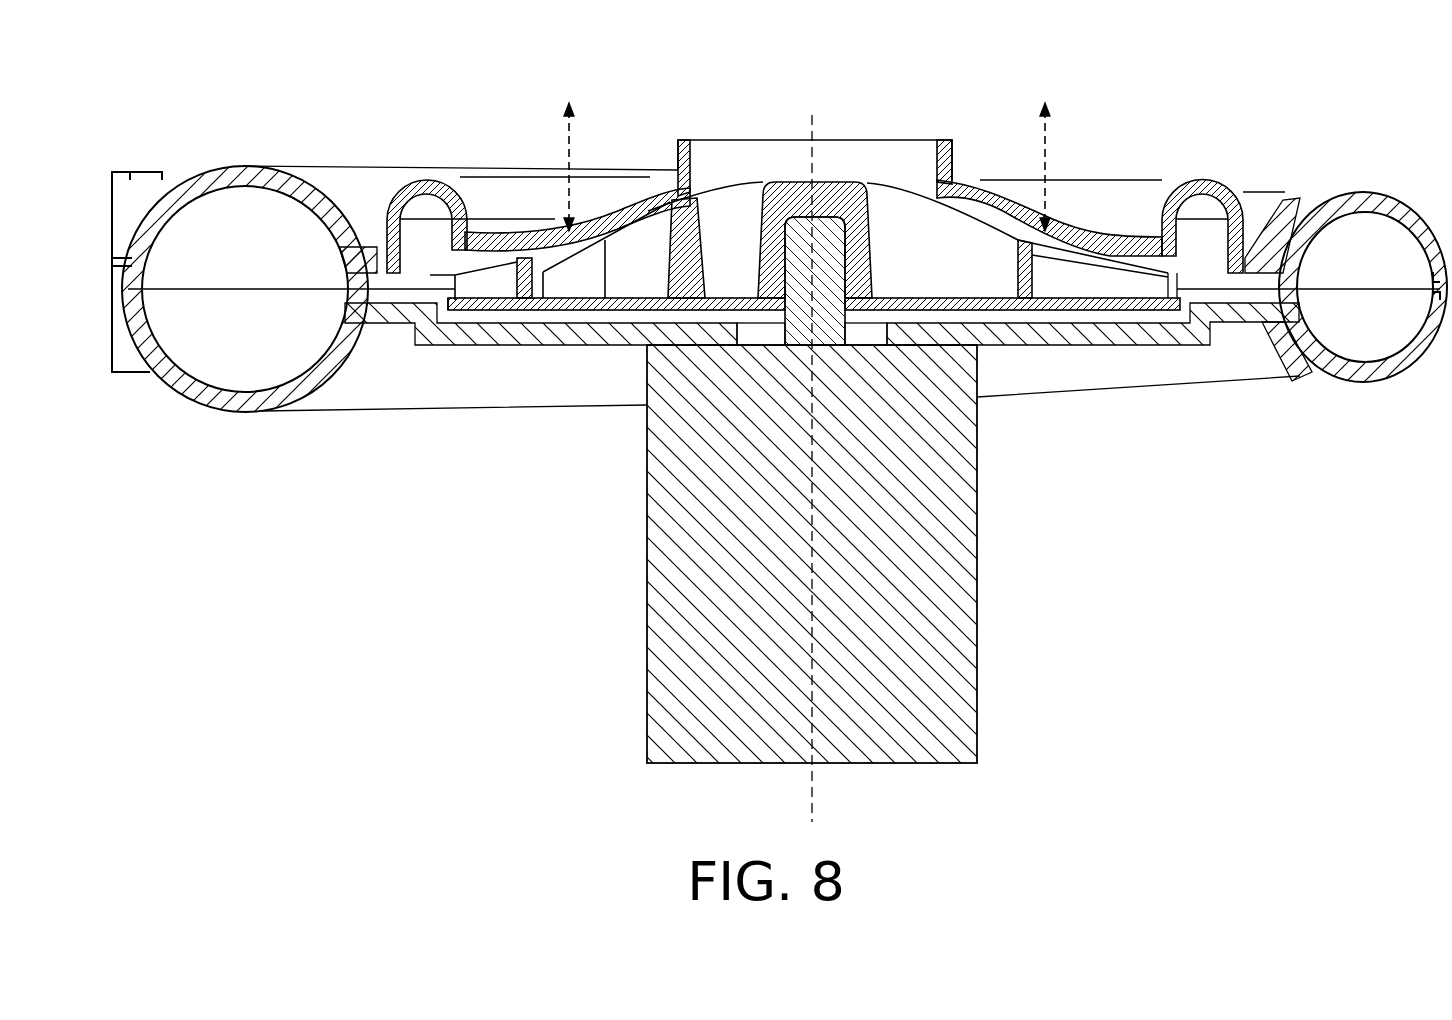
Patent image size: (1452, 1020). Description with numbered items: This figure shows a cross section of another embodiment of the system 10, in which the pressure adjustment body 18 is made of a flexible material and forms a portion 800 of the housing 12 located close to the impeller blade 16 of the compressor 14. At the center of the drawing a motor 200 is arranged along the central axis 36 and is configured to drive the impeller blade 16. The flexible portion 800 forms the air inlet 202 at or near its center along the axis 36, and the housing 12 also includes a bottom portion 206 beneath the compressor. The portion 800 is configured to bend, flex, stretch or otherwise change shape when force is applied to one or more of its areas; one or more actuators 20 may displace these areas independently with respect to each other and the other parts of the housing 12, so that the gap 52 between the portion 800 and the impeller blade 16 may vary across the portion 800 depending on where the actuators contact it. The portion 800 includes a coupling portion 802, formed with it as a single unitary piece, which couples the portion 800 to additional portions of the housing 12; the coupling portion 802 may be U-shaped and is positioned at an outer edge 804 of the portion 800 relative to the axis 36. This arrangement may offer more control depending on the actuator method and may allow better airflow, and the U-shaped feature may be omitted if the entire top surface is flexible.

The system 10 is at (160, 104).
The housing 12 is at (1408, 208).
The compressor 14 is at (1297, 141).
The impeller blade 16 is at (1028, 300).
The pressure adjustment body 18 is at (670, 175).
The actuator 20 is at (806, 152).
The axis 36 is at (806, 772).
The gap 52 is at (988, 290).
The motor 200 is at (646, 675).
The air inlet 202 is at (913, 103).
The bottom portion 206 is at (246, 406).
The portion 800 is at (494, 123).
The coupling portion 802 is at (418, 178).
The outer edge 804 is at (376, 243).